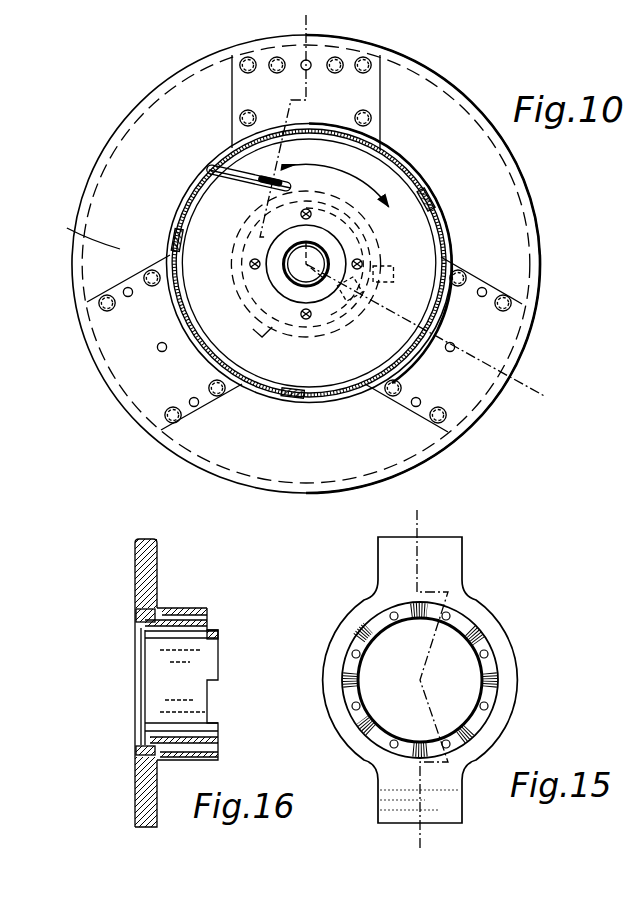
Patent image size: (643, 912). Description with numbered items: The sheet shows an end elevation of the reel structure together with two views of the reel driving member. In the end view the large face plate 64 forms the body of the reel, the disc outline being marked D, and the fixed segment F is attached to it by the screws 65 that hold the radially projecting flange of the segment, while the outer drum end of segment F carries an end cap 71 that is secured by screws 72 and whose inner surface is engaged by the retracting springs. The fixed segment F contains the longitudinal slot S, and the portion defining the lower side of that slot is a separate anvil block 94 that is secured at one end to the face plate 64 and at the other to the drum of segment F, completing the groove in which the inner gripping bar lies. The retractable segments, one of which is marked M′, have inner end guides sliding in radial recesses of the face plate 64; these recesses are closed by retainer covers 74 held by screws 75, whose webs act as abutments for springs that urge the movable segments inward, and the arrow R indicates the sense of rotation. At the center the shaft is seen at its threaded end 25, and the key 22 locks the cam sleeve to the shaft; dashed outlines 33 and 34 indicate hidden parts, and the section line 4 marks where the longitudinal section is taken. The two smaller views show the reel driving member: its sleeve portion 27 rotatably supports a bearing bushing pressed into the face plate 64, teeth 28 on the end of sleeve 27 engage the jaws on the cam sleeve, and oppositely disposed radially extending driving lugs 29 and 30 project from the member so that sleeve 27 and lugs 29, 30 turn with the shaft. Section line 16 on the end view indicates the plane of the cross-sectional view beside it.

In FIG. 10, the disc D is at (440, 80).
In FIG. 10, the face plate 64 is at (80, 241).
In FIG. 10, the screws 65 is at (367, 62).
In FIG. 10, the retainer covers 74 is at (160, 377).
In FIG. 10, the screws 75 is at (178, 423).
In FIG. 10, the fixed segment F is at (406, 167).
In FIG. 10, the end cap 71 is at (397, 197).
In FIG. 10, the rotor direction arrow R is at (413, 253).
In FIG. 10, the movable segment M′ is at (261, 386).
In FIG. 10, the anvil block 94 is at (209, 182).
In FIG. 10, the slot S is at (231, 172).
In FIG. 10, the threaded end 25 is at (317, 247).
In FIG. 10, the screws 72 is at (311, 212).
In FIG. 10, the dashed circle outline 34 is at (269, 329).
In FIG. 10, the key 33 is at (385, 280).
In FIG. 10, the key 22 is at (357, 297).
In FIG. 10, the section line 4- 4 is at (301, 18).
In FIG. 16, the driving lug 29 is at (152, 557).
In FIG. 15, the driving lug 29 is at (445, 561).
In FIG. 16, the driving lug 30 is at (147, 807).
In FIG. 15, the driving lug 30 is at (455, 797).
In FIG. 16, the sleeve portion 27 is at (188, 607).
In FIG. 16, the teeth 28 is at (210, 656).
In FIG. 15, the teeth 28 is at (468, 638).
In FIG. 15, the section line 16- 16 is at (414, 517).